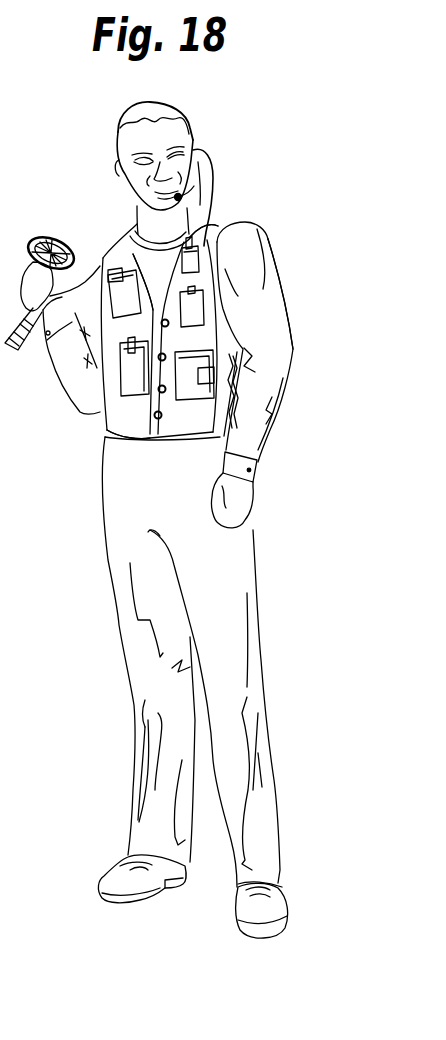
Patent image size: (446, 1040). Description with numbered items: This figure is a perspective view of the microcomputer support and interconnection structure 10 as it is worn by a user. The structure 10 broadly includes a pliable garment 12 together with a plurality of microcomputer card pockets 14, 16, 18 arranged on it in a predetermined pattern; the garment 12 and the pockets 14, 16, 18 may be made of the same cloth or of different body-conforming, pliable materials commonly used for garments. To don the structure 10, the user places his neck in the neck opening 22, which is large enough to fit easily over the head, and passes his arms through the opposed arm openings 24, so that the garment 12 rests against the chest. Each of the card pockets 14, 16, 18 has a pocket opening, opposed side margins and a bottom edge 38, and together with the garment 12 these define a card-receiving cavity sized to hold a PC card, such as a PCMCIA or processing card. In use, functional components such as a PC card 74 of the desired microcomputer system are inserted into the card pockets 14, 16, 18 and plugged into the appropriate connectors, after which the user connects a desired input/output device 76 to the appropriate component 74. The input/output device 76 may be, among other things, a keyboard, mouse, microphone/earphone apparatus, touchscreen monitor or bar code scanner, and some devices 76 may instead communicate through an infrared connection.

The microcomputer support and interconnection structure 10 is at (262, 184).
The pliable garment 12 is at (100, 420).
The microcomputer card pocket 14 is at (178, 353).
The microcomputer card pocket 16 is at (193, 310).
The microcomputer card pocket 18 is at (188, 265).
The neck opening 22 is at (135, 247).
The arm openings 24 is at (246, 238).
The bottom edge 38 is at (140, 268).
The functional component 74 is at (208, 221).
The input/output device 76 is at (206, 171).